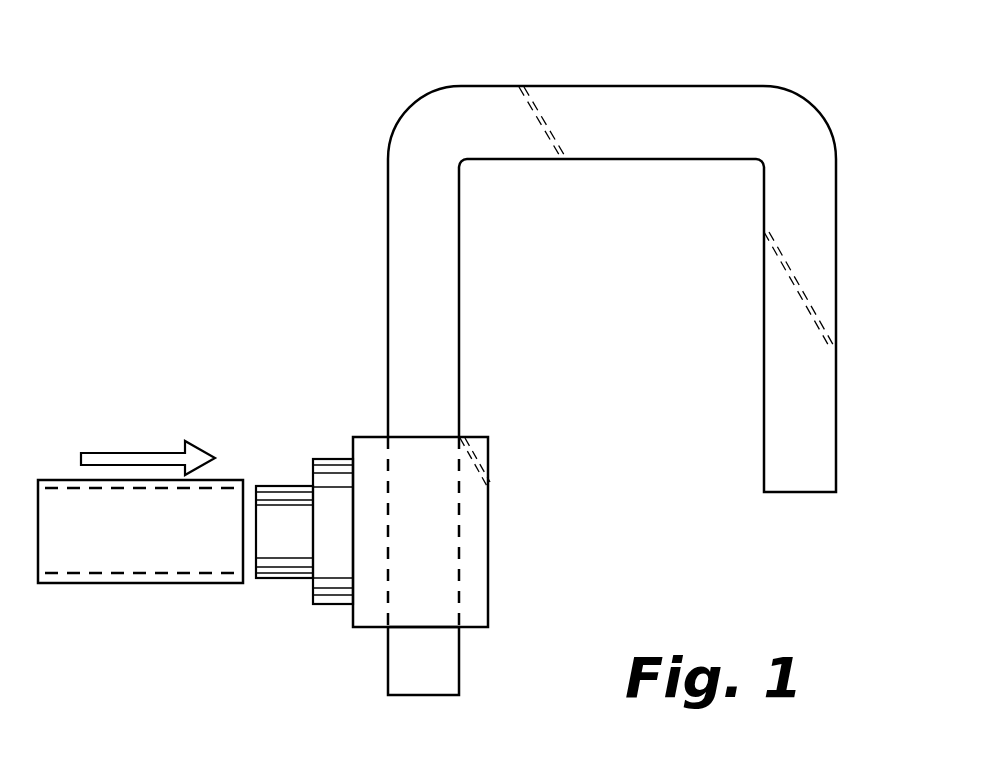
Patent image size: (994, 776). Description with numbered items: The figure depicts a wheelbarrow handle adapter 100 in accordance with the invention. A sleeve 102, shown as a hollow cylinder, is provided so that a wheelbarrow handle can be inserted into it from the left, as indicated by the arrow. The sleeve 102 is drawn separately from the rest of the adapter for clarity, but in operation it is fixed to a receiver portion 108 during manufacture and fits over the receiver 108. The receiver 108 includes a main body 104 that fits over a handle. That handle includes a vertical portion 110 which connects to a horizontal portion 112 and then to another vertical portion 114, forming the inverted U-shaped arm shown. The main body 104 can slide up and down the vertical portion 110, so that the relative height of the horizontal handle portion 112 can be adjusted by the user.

The lighting system 100 is at (181, 277).
The sleeve 102 is at (138, 585).
The main body 104 is at (489, 537).
The receiver portion 108 is at (280, 581).
The vertical portion 110 is at (435, 281).
The horizontal portion 112 is at (616, 108).
The vertical portion 114 is at (808, 354).